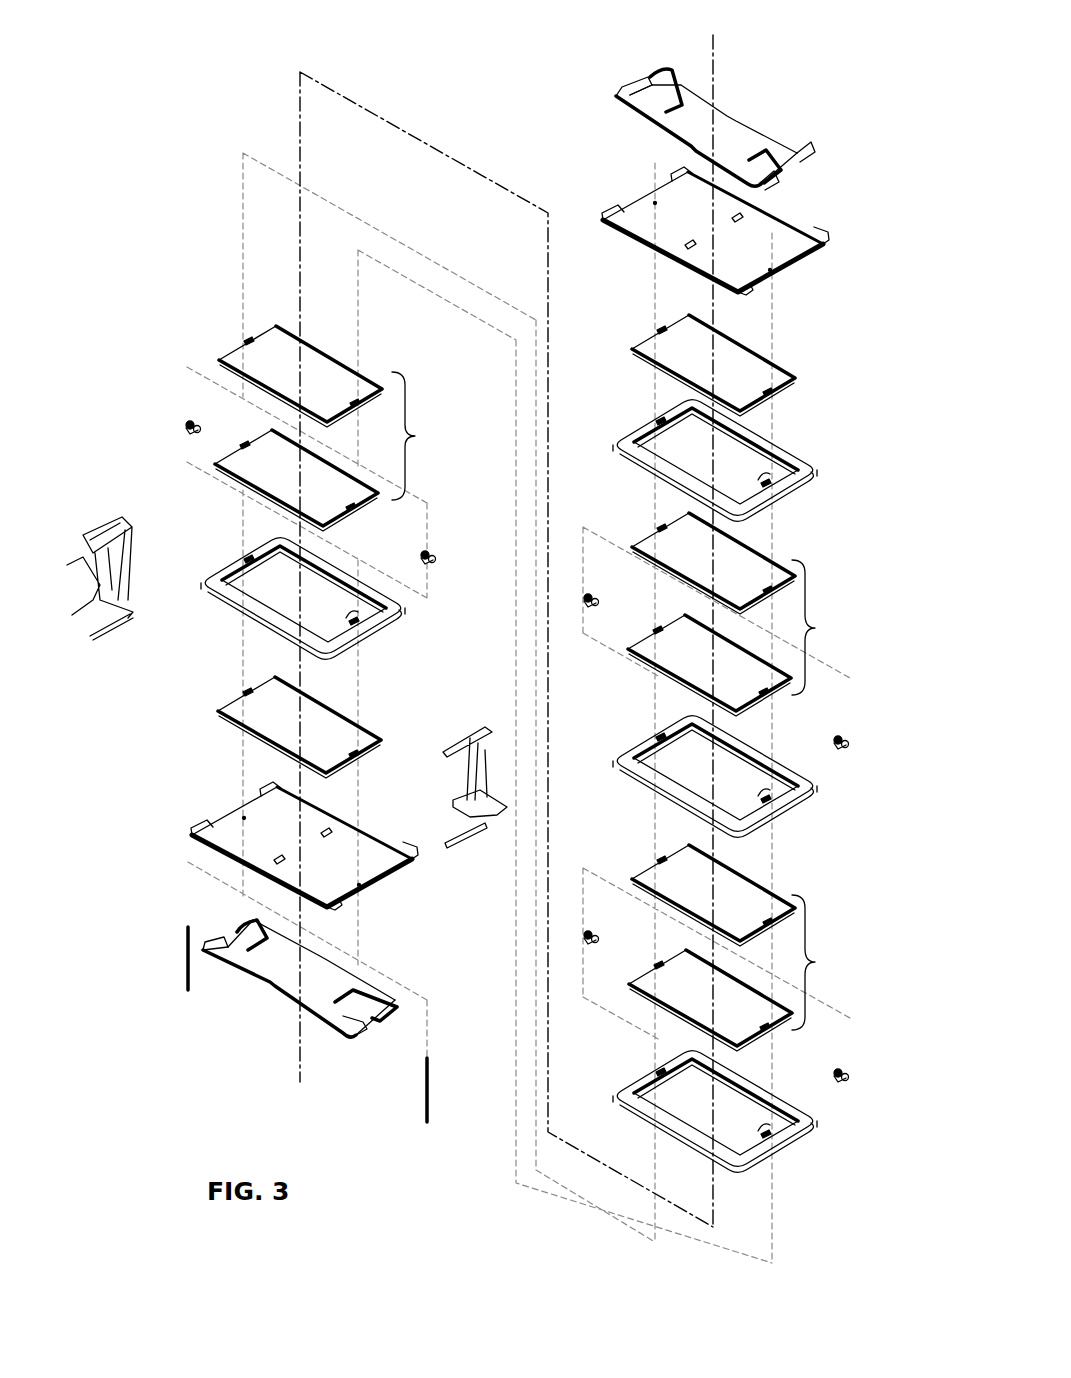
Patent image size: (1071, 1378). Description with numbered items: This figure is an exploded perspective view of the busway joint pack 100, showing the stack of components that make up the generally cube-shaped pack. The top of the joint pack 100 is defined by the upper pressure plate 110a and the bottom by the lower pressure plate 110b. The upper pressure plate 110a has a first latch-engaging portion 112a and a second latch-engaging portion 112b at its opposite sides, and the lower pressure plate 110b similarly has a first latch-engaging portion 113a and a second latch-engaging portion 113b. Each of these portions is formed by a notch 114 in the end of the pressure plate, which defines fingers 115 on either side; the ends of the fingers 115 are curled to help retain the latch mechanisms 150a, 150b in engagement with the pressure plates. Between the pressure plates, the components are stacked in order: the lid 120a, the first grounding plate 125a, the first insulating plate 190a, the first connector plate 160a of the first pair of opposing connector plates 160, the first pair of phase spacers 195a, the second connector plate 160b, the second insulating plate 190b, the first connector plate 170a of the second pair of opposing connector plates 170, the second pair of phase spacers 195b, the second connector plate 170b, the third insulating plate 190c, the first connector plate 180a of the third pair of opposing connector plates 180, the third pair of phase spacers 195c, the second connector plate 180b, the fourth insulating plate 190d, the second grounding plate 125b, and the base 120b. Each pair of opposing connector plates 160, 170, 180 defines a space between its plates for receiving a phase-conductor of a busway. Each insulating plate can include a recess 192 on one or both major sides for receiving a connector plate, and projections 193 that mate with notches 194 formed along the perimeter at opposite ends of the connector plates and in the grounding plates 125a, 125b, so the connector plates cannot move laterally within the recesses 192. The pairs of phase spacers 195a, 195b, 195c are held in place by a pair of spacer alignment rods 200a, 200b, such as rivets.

The joint pack 100 is at (175, 78).
The upper pressure plate 110a is at (688, 120).
The lower pressure plate 110b is at (283, 985).
The first latch-engaging portion 112a is at (690, 80).
The second latch-engaging portion 112b is at (800, 150).
The first latch-engaging portion 113a is at (207, 962).
The second latch-engaging portion 113b is at (340, 1037).
The notch 114 is at (645, 90).
The finger 115 is at (672, 78).
The lid 120a is at (787, 250).
The base 120b is at (220, 826).
The first grounding plate 125a is at (750, 352).
The second grounding plate 125b is at (255, 700).
The latch mechanism 150a is at (97, 620).
The latch mechanism 150b is at (492, 830).
The first pair of opposing connector plates 160 is at (833, 627).
The first connector plate 160a is at (742, 553).
The second connector plate 160b is at (690, 640).
The second pair of opposing connector plates 170 is at (832, 962).
The first connector plate 170a is at (742, 880).
The second connector plate 170b is at (675, 985).
The third pair of opposing connector plates 180 is at (434, 436).
The first connector plate 180a is at (260, 350).
The second connector plate 180b is at (272, 466).
The first insulating plate 190a is at (800, 468).
The second insulating plate 190b is at (650, 775).
The third insulating plate 190c is at (650, 1098).
The fourth insulating plate 190d is at (402, 606).
The recess 192 is at (662, 452).
The projection 193 is at (660, 422).
The notch 194 is at (663, 333).
The first pair of phase spacers 195a is at (585, 602).
The second pair of phase spacers 195b is at (845, 1070).
The third pair of phase spacers 195c is at (185, 425).
The spacer alignment rod 200a is at (180, 990).
The spacer alignment rod 200b is at (430, 1125).